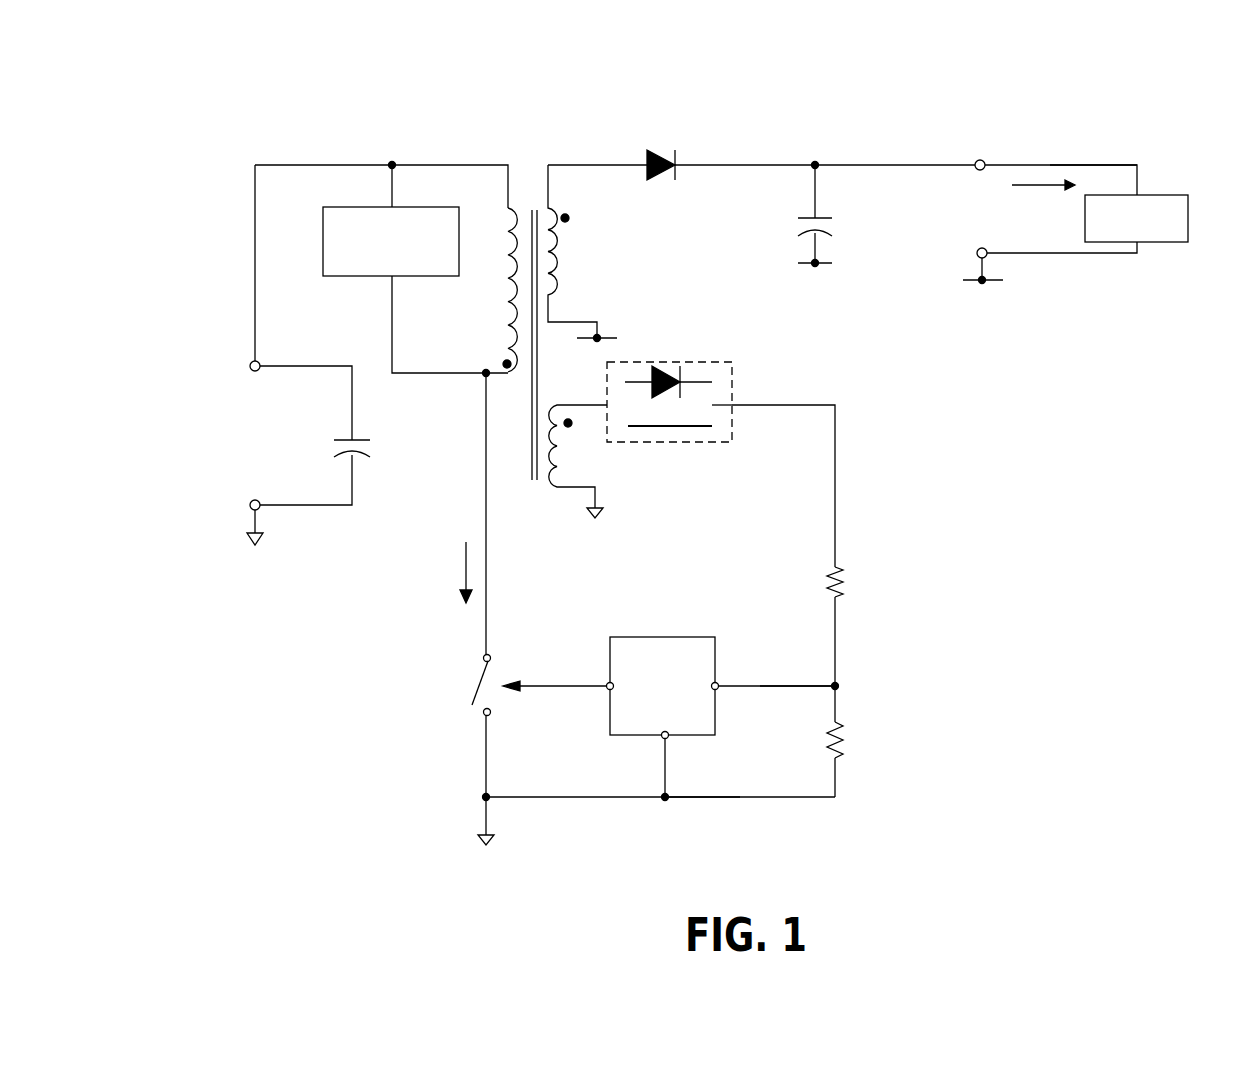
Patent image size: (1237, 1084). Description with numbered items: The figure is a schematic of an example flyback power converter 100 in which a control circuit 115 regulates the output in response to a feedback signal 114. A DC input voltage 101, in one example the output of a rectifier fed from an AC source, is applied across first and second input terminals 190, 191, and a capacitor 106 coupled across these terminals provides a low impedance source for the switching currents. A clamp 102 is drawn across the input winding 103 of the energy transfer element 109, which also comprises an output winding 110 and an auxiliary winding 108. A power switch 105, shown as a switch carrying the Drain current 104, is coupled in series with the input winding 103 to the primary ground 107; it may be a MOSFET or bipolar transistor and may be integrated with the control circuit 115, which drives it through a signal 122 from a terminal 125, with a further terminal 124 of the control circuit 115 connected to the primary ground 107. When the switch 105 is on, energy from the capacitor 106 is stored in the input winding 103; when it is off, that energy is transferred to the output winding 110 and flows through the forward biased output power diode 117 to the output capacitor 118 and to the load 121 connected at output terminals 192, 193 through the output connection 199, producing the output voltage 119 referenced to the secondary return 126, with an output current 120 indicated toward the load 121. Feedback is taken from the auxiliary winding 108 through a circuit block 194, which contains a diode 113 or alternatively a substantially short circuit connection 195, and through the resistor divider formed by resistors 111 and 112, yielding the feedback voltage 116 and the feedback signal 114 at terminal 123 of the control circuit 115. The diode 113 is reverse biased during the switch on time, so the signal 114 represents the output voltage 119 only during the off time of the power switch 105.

The power converter 100 is at (247, 109).
The DC input voltage 101 is at (228, 453).
The clamp circuit 102 is at (352, 283).
The input winding 103 is at (507, 235).
The Drain current 104 is at (462, 559).
The power switch 105 is at (478, 672).
The capacitor 106 is at (378, 455).
The primary ground 107 is at (507, 843).
The auxiliary winding 108 is at (570, 445).
The energy transfer element 109 is at (533, 157).
The output winding 110 is at (558, 256).
The resistor 111 is at (823, 579).
The resistor 112 is at (847, 737).
The auxiliary winding diode 113 is at (672, 363).
The feedback signal 114 is at (777, 679).
The control circuit 115 is at (650, 633).
The feedback voltage VFB 116 is at (733, 773).
The output power diode 117 is at (663, 183).
The output capacitor 118 is at (863, 197).
The output voltage 119 is at (900, 252).
The output current 120 is at (1045, 222).
The load 121 is at (1158, 188).
The drive signal 122 is at (552, 692).
The terminal 123 is at (750, 655).
The ground terminal 124 is at (660, 743).
The drive terminal 125 is at (605, 680).
The secondary return 126 is at (815, 273).
The first input terminal 190 is at (243, 380).
The second input terminal 191 is at (250, 518).
The output terminal 192 is at (993, 158).
The output terminal 193 is at (967, 258).
The circuit block 194 is at (672, 445).
The substantially short circuit connection 195 is at (705, 418).
The output connection 199 is at (1105, 162).